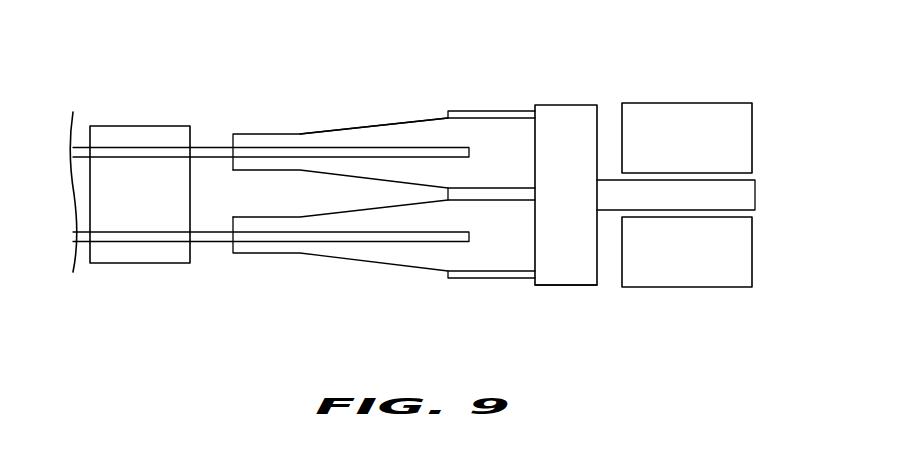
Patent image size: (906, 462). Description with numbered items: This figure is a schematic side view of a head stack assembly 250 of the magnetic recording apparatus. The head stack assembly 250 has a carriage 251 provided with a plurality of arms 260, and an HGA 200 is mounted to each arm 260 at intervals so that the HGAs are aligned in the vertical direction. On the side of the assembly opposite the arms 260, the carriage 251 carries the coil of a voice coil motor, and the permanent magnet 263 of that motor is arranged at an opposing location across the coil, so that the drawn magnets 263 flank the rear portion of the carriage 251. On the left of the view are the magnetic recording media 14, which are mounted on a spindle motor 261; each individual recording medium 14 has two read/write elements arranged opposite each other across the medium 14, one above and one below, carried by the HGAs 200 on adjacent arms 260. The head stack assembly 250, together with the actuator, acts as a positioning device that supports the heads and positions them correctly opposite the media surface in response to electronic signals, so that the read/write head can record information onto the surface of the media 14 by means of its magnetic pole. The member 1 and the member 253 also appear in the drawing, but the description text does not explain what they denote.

The optical connector 1 is at (233, 137).
The optical fiber 14 is at (205, 152).
The ferrule housing 200 is at (326, 138).
The processing device 250 is at (576, 82).
The holder block 251 is at (567, 270).
The rod 253 is at (745, 193).
The support plate 260 is at (450, 111).
The clamp 261 is at (130, 140).
The block 263 is at (686, 117).